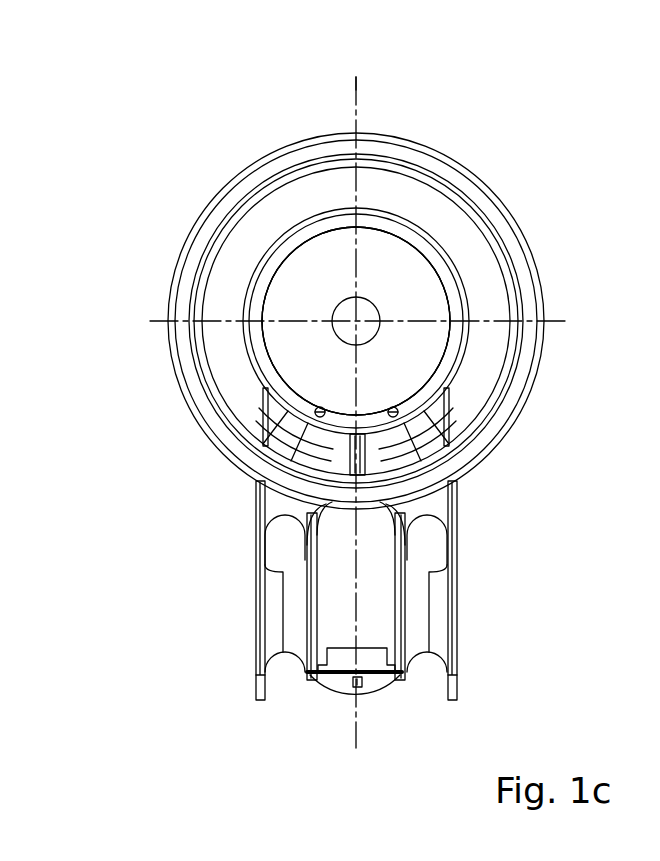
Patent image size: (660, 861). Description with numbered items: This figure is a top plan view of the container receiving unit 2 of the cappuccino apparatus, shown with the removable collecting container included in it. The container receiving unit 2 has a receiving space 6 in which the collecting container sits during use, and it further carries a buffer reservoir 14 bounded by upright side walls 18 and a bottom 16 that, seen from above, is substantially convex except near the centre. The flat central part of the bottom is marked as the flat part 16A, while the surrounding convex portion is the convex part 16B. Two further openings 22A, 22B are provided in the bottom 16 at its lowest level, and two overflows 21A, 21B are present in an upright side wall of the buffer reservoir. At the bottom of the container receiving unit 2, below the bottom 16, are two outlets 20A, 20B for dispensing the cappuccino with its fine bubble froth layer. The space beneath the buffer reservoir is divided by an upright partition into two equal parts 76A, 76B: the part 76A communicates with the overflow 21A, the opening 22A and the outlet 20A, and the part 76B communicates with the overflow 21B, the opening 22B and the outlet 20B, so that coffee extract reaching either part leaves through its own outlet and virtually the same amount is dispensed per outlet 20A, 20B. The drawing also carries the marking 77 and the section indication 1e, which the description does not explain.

The container receiving unit 2 is at (178, 390).
The receiving space 6 is at (428, 208).
The buffer reservoir 14 is at (298, 277).
The bottom 16 is at (295, 335).
The flat part of the bottom 16A is at (365, 313).
The convex part of the bottom 16B is at (408, 273).
The upright side walls 18 is at (301, 227).
The first outlet 20A is at (262, 512).
The second outlet 20B is at (450, 512).
The first overflow 21A is at (300, 457).
The second overflow 21B is at (412, 445).
The first further opening 22A is at (322, 418).
The second further opening 22B is at (396, 414).
The first space part 76A is at (280, 572).
The second space part 76B is at (432, 572).
The central tab 77 is at (357, 478).
The section line 1e- 1e is at (362, 77).